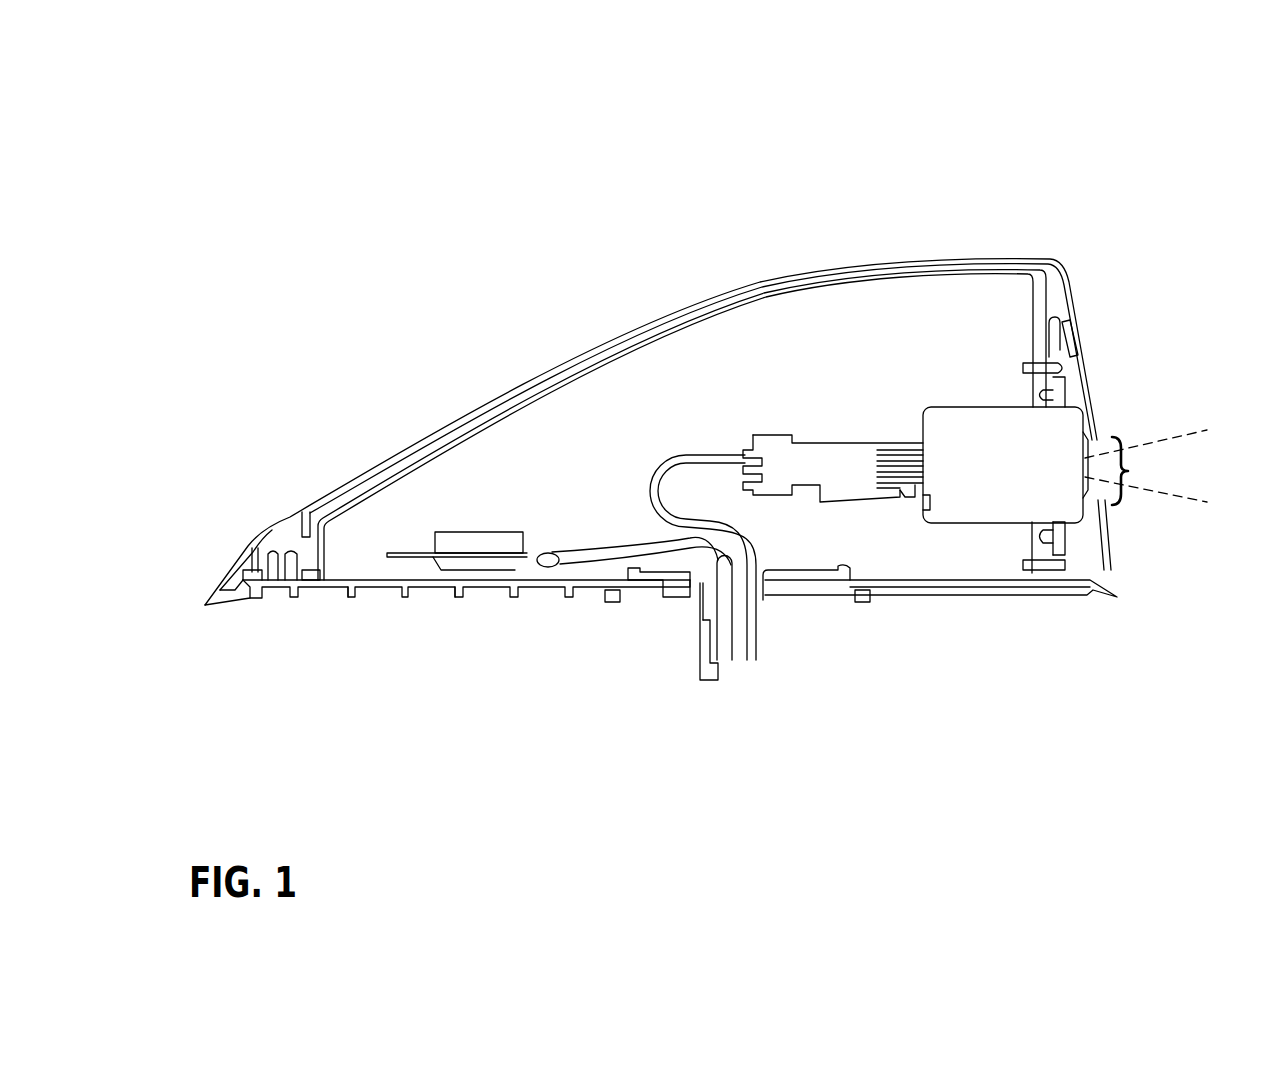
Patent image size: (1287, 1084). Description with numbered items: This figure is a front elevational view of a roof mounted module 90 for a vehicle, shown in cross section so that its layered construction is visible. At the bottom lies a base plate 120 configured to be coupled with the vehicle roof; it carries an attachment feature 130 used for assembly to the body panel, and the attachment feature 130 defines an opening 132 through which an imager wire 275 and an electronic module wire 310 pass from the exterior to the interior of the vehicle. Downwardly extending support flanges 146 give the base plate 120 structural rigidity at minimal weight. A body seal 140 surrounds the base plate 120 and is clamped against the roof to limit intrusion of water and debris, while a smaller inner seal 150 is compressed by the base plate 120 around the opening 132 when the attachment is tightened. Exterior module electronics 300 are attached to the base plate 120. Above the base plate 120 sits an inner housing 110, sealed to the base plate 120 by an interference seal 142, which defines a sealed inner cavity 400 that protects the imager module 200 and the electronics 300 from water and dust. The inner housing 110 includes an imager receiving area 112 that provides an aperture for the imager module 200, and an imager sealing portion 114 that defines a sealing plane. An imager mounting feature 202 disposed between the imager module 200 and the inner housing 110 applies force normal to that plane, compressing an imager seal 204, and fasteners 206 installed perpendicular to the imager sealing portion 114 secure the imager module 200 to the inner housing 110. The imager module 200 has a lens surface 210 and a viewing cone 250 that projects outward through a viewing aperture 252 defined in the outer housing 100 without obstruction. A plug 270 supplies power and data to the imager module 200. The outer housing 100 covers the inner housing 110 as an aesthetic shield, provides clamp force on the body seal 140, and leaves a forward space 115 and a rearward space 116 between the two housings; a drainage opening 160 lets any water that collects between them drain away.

The roof mounted module 90 is at (840, 203).
The outer housing 100 is at (283, 521).
The inner housing 110 is at (1045, 298).
The imager receiving area 112 is at (1033, 524).
The imager sealing portion 114 is at (1049, 340).
The forward space 115 is at (272, 543).
The rearward space 116 is at (1077, 403).
The base plate 120 is at (375, 598).
The attachment feature 130 is at (680, 590).
The opening 132 is at (700, 587).
The body seal 140 is at (230, 598).
The interference seal 142 is at (308, 582).
The support flanges 146 is at (348, 598).
The inner seal 150 is at (612, 602).
The drainage opening 160 is at (1105, 576).
The imager module 200 is at (979, 497).
The imager mounting feature 202 is at (1060, 393).
The imager seal 204 is at (1022, 368).
The fasteners 206 is at (1040, 392).
The lens surface 210 is at (1087, 450).
The viewing cone 250 is at (1180, 453).
The viewing aperture 252 is at (1118, 472).
The plug 270 is at (775, 437).
The imager wire 275 is at (655, 475).
The exterior module electronics 300 is at (490, 557).
The electronic module wire 310 is at (725, 652).
The inner cavity 400 is at (497, 462).